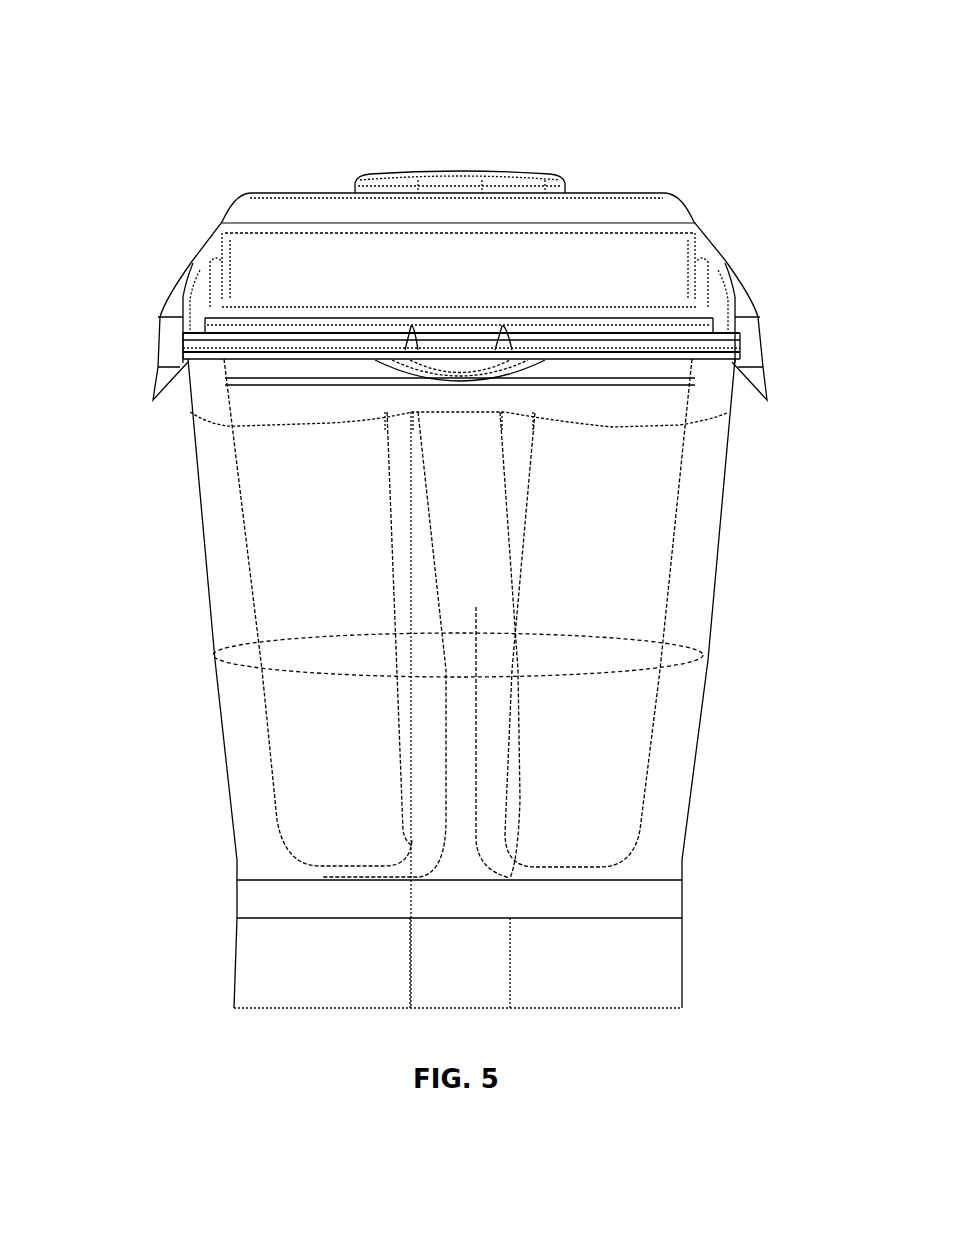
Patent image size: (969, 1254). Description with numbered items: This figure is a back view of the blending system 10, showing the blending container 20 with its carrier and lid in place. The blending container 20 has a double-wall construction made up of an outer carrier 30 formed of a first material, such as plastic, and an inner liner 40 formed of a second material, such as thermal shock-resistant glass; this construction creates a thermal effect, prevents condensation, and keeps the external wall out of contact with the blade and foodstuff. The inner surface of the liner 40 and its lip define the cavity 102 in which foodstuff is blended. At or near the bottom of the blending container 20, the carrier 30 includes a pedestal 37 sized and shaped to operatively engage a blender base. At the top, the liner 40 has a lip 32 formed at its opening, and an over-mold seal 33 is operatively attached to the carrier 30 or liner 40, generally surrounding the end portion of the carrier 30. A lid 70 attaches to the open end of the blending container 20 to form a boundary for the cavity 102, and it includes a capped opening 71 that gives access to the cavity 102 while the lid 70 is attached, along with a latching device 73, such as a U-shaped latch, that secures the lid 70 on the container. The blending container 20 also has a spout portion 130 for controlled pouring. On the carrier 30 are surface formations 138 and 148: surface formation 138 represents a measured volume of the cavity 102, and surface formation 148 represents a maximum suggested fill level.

The blending system 10 is at (741, 104).
The blending container 20 is at (776, 586).
The carrier 30 is at (711, 632).
The lip 32 is at (713, 323).
The over-mold seal 33 is at (734, 343).
The pedestal 37 is at (688, 968).
The liner 40 is at (653, 733).
The lid 70 is at (680, 205).
The capped opening 71 is at (458, 171).
The latching device 73 is at (758, 294).
The cavity 102 is at (322, 584).
The spout portion 130 is at (407, 343).
The surface formation 138 is at (227, 647).
The surface formation 148 is at (190, 412).